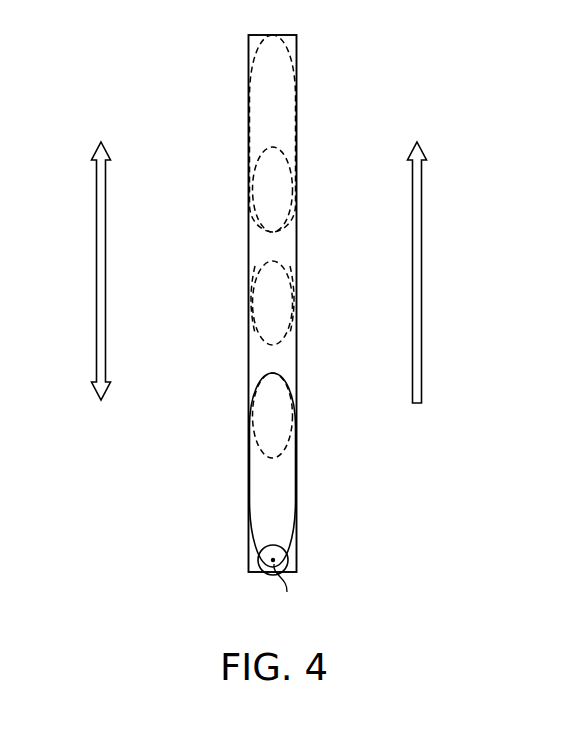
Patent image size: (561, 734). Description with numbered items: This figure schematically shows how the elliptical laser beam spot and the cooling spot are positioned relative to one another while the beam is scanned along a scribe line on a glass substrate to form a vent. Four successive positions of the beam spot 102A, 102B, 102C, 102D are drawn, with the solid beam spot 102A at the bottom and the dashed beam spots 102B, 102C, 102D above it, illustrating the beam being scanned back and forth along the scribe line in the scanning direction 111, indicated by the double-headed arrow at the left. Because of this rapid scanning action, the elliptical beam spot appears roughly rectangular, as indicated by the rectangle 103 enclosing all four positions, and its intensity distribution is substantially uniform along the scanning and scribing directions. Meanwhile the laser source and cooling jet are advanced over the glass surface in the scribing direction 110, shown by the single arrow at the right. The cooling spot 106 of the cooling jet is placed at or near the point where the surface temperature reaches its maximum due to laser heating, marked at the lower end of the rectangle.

The beam spot 102A is at (260, 397).
The beam spot 102B is at (258, 278).
The beam spot 102C is at (258, 162).
The beam spot 102D is at (258, 48).
The rectangle 103 is at (297, 47).
The cooling spot 106 is at (258, 562).
The scribing direction 110 is at (423, 273).
The scanning direction 111 is at (97, 273).